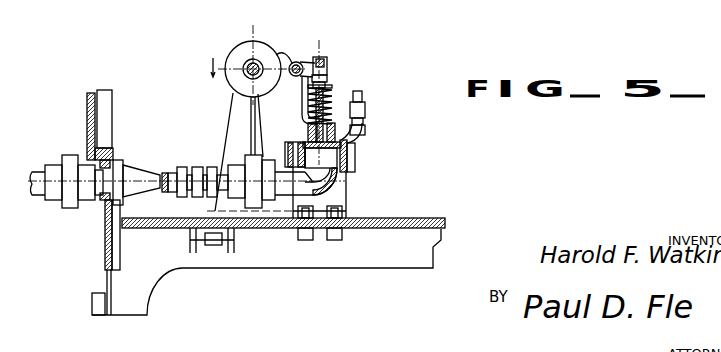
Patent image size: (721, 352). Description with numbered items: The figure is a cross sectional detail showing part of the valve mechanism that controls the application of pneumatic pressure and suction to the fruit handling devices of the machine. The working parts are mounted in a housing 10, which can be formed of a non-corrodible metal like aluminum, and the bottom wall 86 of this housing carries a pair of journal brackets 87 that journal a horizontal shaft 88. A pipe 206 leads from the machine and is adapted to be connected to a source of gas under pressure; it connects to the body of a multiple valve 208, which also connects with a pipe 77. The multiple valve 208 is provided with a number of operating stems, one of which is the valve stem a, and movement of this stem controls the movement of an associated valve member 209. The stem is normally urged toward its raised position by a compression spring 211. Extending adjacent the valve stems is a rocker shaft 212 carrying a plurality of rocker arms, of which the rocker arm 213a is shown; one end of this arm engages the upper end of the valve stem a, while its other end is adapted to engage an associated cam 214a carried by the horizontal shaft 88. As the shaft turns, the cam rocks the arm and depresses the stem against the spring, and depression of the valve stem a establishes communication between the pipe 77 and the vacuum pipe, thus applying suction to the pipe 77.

The housing 10 is at (106, 241).
The pipe 206 is at (36, 172).
The bottom wall 86 is at (386, 219).
The journal brackets 87 is at (229, 134).
The horizontal shaft 88 is at (245, 66).
The cam 214a is at (247, 62).
The rocker shaft 212 is at (298, 62).
The rocker arm 213a is at (321, 56).
The valve stem a is at (325, 60).
The compression spring 211 is at (327, 95).
The pipe 77 is at (365, 98).
The multiple valve 208 is at (364, 148).
The valve member 209 is at (349, 158).